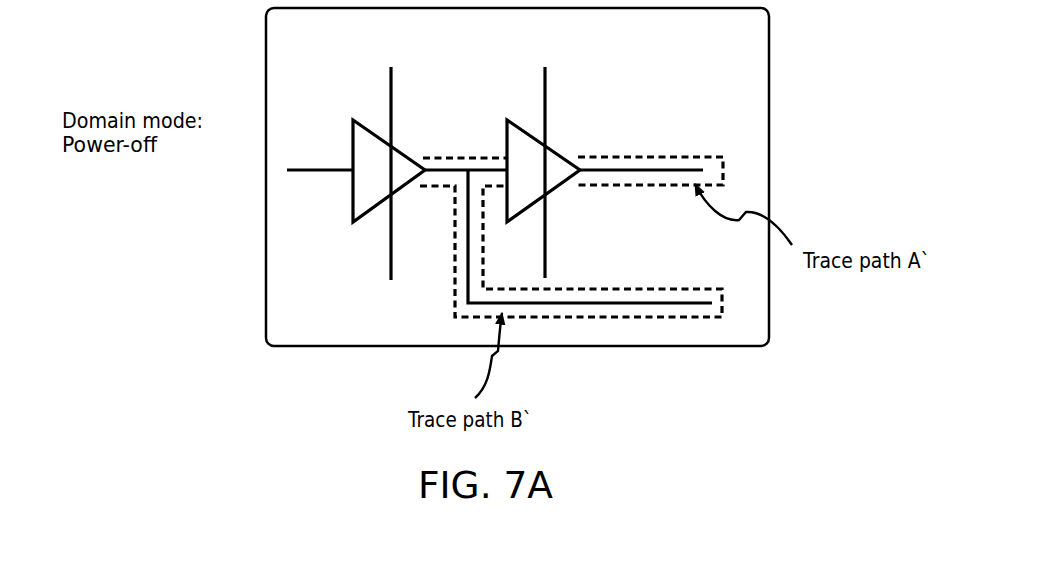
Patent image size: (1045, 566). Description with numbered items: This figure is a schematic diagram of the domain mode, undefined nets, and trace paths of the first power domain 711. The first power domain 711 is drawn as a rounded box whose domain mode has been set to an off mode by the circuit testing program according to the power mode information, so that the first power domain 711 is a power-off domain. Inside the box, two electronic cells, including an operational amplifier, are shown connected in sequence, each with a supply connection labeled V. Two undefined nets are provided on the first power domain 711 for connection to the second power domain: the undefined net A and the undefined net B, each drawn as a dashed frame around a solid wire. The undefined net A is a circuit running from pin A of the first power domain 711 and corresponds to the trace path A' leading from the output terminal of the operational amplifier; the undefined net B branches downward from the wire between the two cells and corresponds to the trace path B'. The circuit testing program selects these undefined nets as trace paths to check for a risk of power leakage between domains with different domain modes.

The first power domain 711 is at (260, 146).
The undefined net A is at (689, 148).
The undefined net B is at (685, 326).
The supply voltage V is at (467, 153).